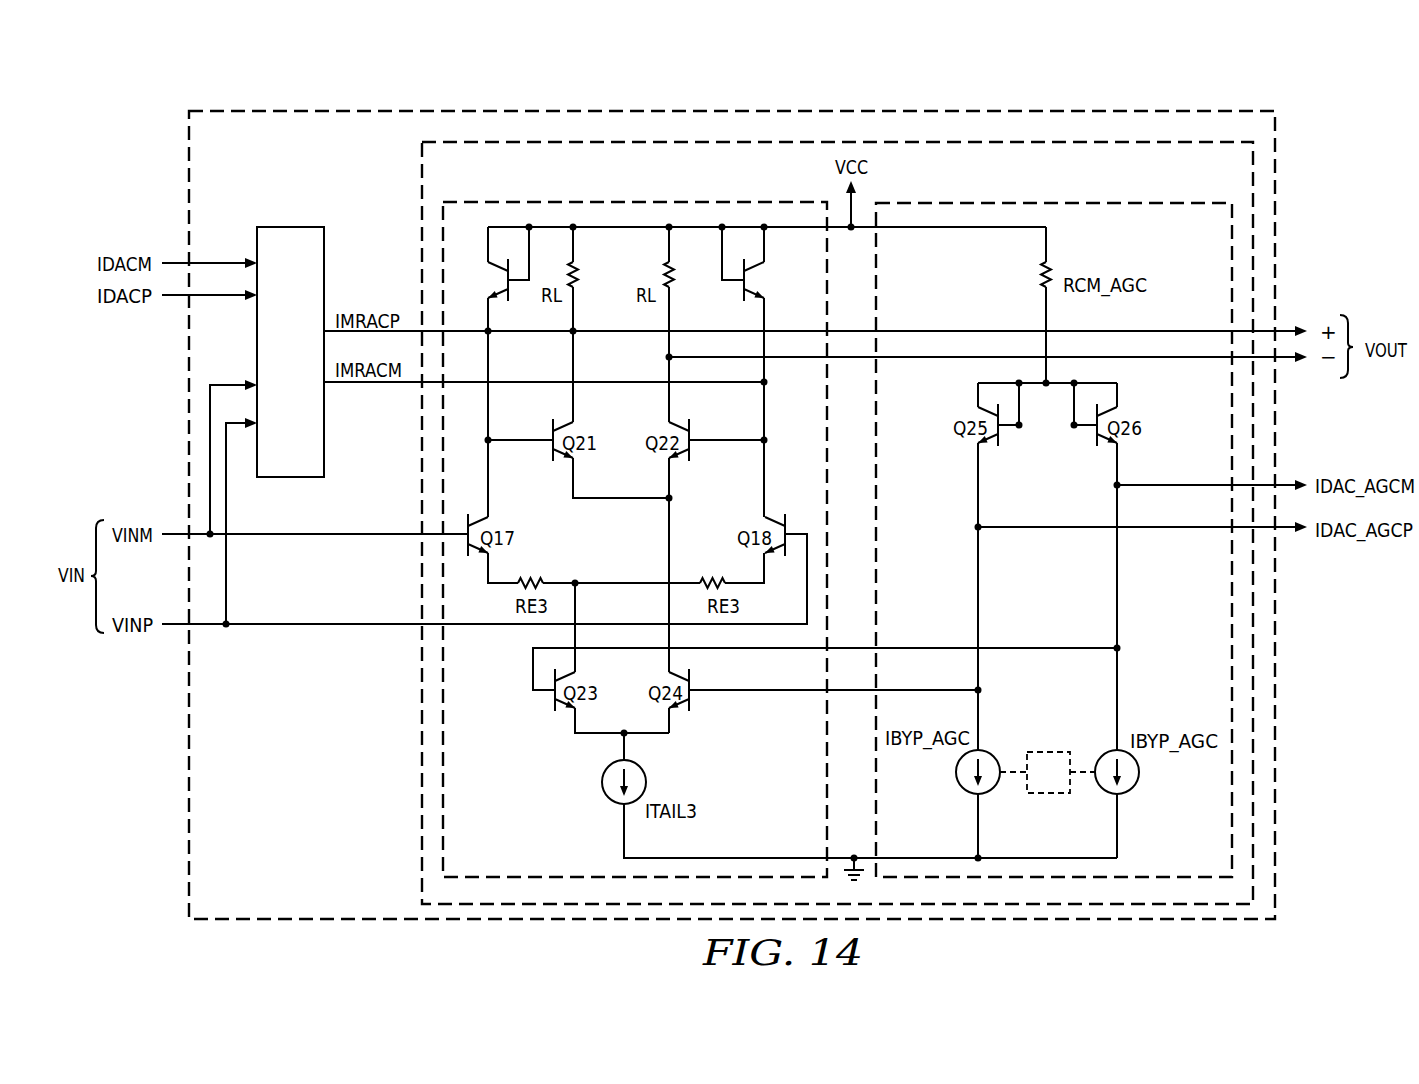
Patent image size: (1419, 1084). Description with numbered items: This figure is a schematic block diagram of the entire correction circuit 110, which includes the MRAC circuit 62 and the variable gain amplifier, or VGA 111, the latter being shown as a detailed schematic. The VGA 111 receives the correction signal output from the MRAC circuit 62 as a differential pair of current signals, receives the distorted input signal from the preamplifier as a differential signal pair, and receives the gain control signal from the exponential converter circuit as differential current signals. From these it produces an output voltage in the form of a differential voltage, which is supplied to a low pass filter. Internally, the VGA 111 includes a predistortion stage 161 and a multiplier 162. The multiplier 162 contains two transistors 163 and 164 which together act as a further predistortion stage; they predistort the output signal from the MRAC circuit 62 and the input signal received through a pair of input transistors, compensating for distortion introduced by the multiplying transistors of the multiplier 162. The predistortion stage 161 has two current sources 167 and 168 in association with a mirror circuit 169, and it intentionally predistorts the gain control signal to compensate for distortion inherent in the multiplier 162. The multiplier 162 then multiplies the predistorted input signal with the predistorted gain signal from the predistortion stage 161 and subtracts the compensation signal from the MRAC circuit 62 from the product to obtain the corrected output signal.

The MRAC circuit 62 is at (290, 226).
The correction circuit 110 is at (1275, 137).
The variable gain amplifier (VGA) 111 is at (1253, 188).
The predistortion stage 161 is at (1022, 202).
The multiplier 162 is at (500, 201).
The transistor 163 is at (510, 303).
The transistor 164 is at (736, 302).
The current source 167 is at (987, 751).
The current source 168 is at (1104, 751).
The mirror circuit 169 is at (1048, 794).